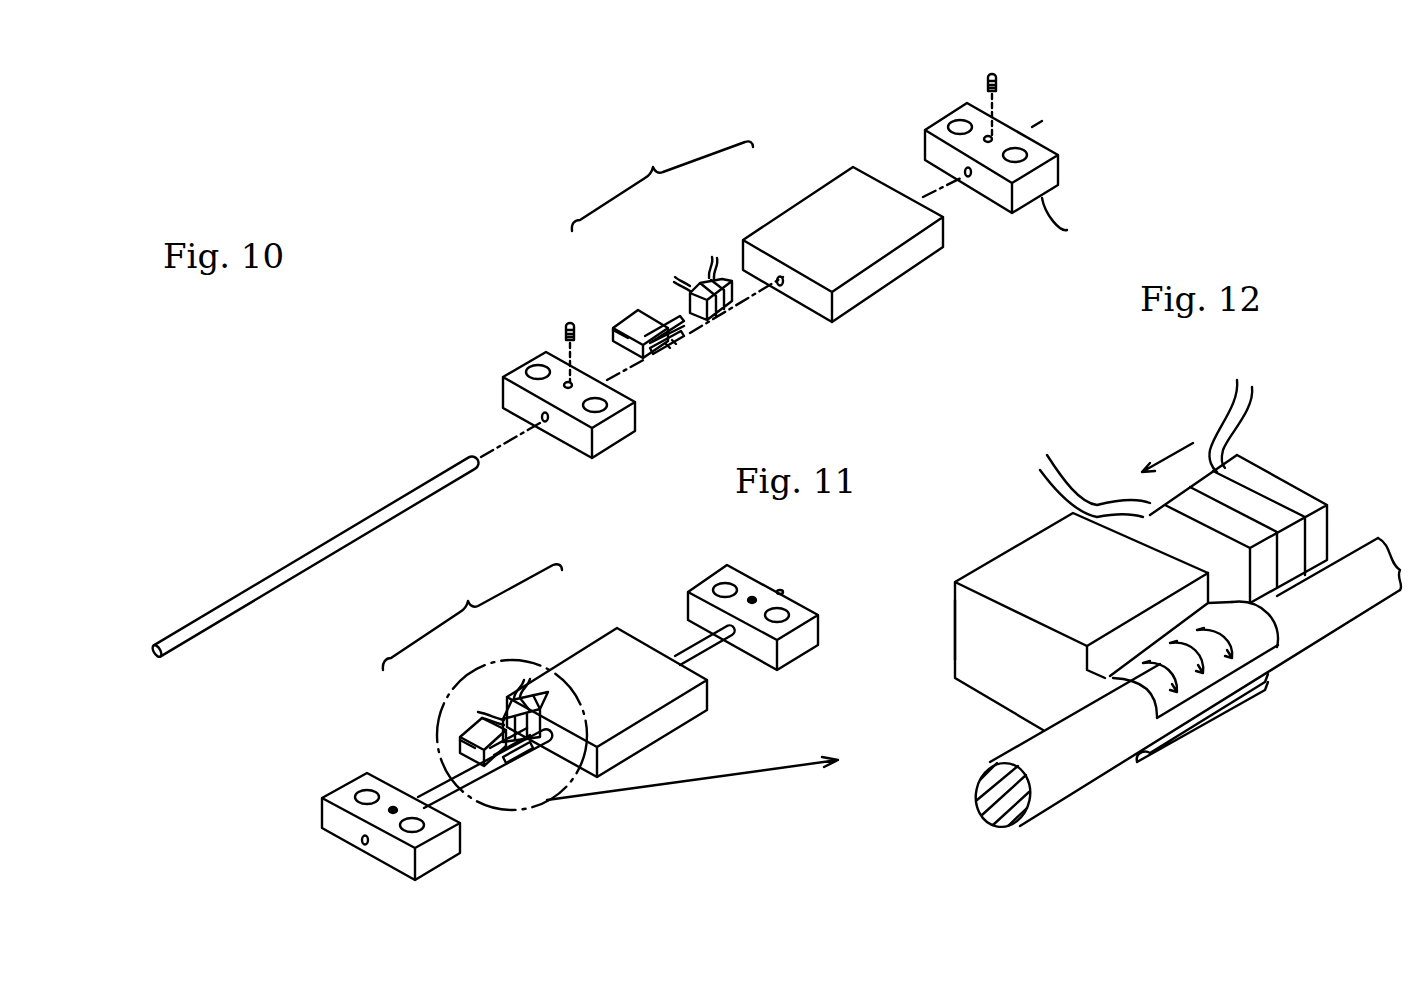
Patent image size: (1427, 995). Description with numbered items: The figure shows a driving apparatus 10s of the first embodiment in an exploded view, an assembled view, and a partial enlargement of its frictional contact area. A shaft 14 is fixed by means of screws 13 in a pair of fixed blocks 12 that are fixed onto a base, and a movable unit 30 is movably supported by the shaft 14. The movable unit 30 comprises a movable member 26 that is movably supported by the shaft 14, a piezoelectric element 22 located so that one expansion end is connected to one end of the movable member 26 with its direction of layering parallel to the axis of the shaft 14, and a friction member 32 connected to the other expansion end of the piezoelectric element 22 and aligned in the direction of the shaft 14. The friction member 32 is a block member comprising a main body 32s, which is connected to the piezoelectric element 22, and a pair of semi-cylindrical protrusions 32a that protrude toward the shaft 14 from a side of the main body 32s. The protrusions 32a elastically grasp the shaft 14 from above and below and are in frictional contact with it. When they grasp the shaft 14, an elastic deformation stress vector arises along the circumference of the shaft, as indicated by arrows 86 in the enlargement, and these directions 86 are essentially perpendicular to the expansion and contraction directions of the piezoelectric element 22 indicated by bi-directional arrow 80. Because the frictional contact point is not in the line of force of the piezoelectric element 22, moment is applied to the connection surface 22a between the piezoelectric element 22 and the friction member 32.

In FIG. 10, the driving apparatus 10s is at (433, 194).
In FIG. 10, the fixed block 12 is at (620, 437).
In FIG. 11, the fixed block 12 is at (440, 868).
In FIG. 10, the screw 13 is at (570, 325).
In FIG. 11, the screw 13 is at (390, 810).
In FIG. 10, the shaft 14 is at (318, 561).
In FIG. 11, the shaft 14 is at (710, 648).
In FIG. 12, the shaft 14 is at (1070, 783).
In FIG. 10, the piezoelectric element 22 is at (703, 277).
In FIG. 11, the piezoelectric element 22 is at (507, 703).
In FIG. 12, the piezoelectric element 22 is at (1275, 485).
In FIG. 10, the connection surface 22a is at (698, 320).
In FIG. 10, the movable member 26 is at (800, 207).
In FIG. 11, the movable member 26 is at (587, 650).
In FIG. 10, the movable unit 30 is at (662, 185).
In FIG. 11, the movable unit 30 is at (472, 617).
In FIG. 10, the friction member 32 is at (637, 317).
In FIG. 11, the friction member 32 is at (477, 730).
In FIG. 12, the friction member 32 is at (1033, 555).
In FIG. 10, the main body 32s is at (613, 337).
In FIG. 11, the main body 32s is at (463, 750).
In FIG. 12, the main body 32s is at (1002, 678).
In FIG. 10, the semi-cylindrical protrusion 32a is at (680, 357).
In FIG. 11, the semi-cylindrical protrusion 32a is at (517, 753).
In FIG. 12, the semi-cylindrical protrusion 32a is at (1223, 667).
In FIG. 12, the bi-directional arrow 80 is at (1170, 453).
In FIG. 12, the arrows indicating stress directions 86 is at (1227, 640).